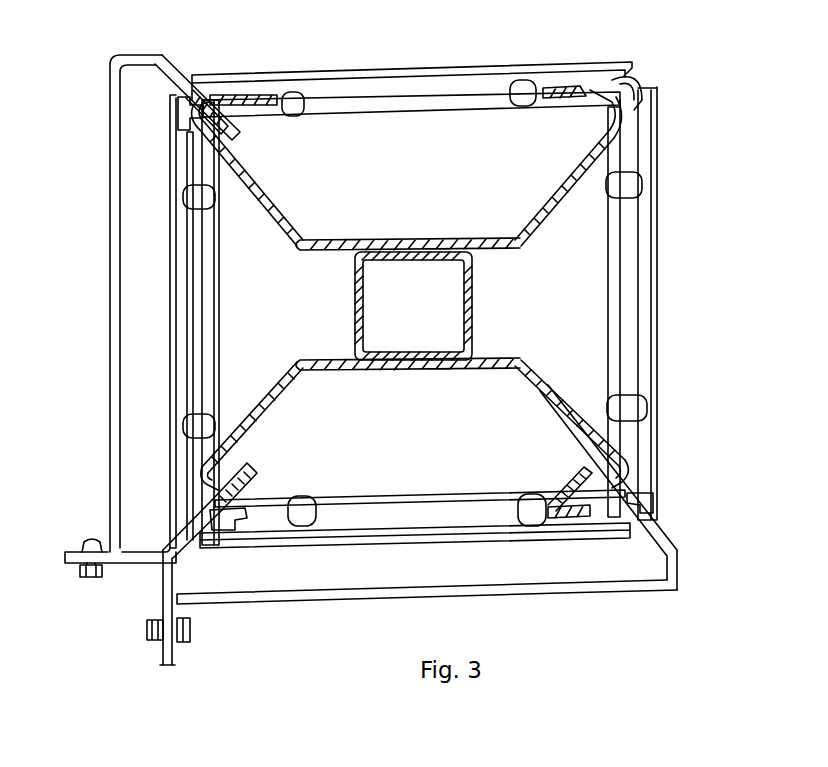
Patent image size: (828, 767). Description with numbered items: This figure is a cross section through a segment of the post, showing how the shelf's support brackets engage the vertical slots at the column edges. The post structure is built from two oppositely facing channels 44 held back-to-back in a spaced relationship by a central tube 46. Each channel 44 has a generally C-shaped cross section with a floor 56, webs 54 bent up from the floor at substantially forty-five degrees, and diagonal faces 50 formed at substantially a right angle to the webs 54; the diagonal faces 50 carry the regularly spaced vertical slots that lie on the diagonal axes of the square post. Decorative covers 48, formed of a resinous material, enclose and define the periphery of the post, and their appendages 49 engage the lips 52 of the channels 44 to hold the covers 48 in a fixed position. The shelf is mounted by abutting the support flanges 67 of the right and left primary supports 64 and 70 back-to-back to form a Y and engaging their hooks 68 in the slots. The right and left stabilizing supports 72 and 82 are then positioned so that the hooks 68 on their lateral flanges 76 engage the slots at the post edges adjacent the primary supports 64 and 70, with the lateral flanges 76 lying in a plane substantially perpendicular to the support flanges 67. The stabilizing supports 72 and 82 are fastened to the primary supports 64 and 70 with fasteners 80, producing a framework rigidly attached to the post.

The channel 44 is at (410, 290).
The central tube 46 is at (475, 304).
The decorative cover 48 is at (447, 66).
The appendage 49 is at (290, 117).
The diagonal face 50 is at (212, 95).
The lip 52 is at (557, 108).
The web 54 is at (545, 212).
The floor 56 is at (342, 240).
The right primary support bracket 64 is at (127, 567).
The support flange 67 is at (168, 540).
The hook 68 is at (235, 137).
The left primary support bracket 70 is at (158, 655).
The right stabilizing support 72 is at (553, 593).
The lateral flange 76 is at (171, 66).
The fastener 80 is at (88, 538).
The left stabilizing support 82 is at (110, 177).